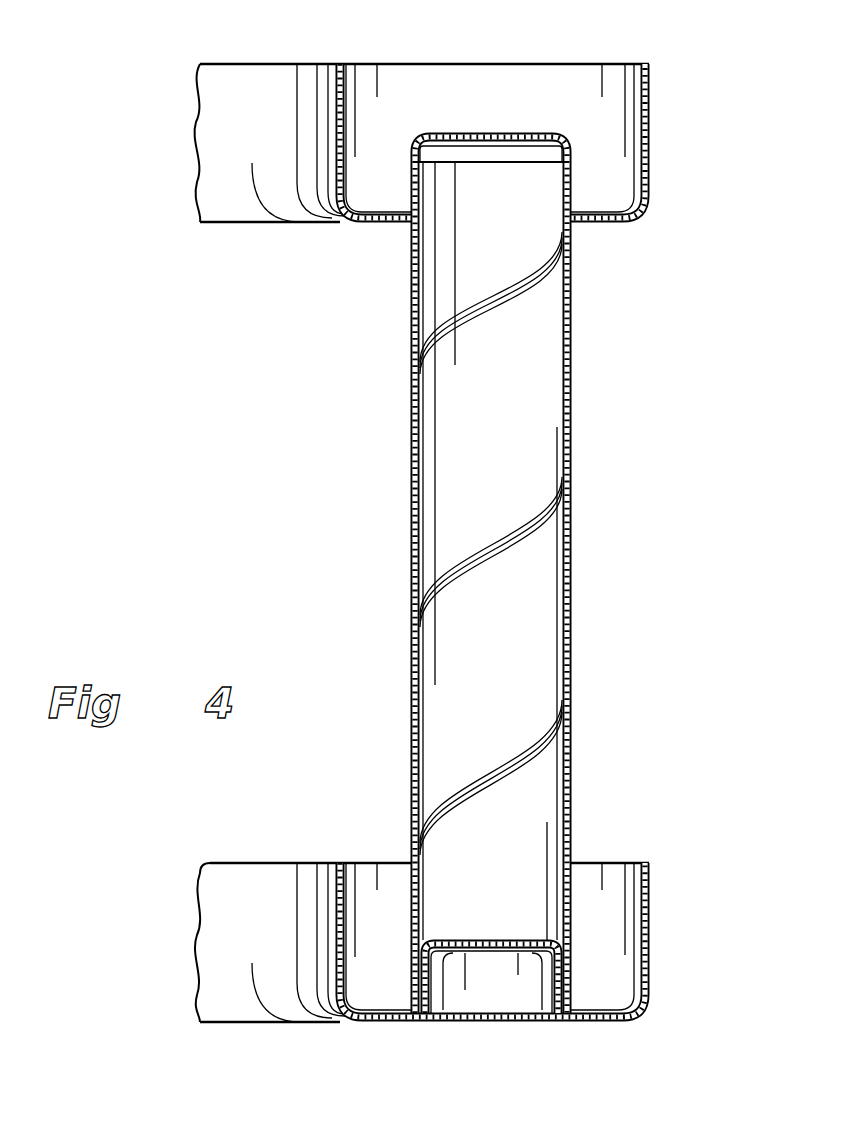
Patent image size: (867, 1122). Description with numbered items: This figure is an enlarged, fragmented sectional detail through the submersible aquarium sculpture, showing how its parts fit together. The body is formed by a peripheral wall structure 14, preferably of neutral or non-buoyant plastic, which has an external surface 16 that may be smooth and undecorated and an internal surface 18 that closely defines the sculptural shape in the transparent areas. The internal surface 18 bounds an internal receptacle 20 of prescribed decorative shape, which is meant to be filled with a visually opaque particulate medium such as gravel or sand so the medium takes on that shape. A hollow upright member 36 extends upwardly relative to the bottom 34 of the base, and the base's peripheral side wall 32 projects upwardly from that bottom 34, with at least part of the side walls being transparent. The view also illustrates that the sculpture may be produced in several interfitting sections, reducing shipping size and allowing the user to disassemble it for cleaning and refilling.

The peripheral wall structure 14 is at (650, 150).
The external surface 16 is at (650, 97).
The internal surface 18 is at (641, 118).
The internal receptacle 20 is at (468, 487).
The peripheral side wall 32 is at (250, 898).
The bottom 34 is at (390, 1015).
The hollow upright member 36 is at (573, 607).